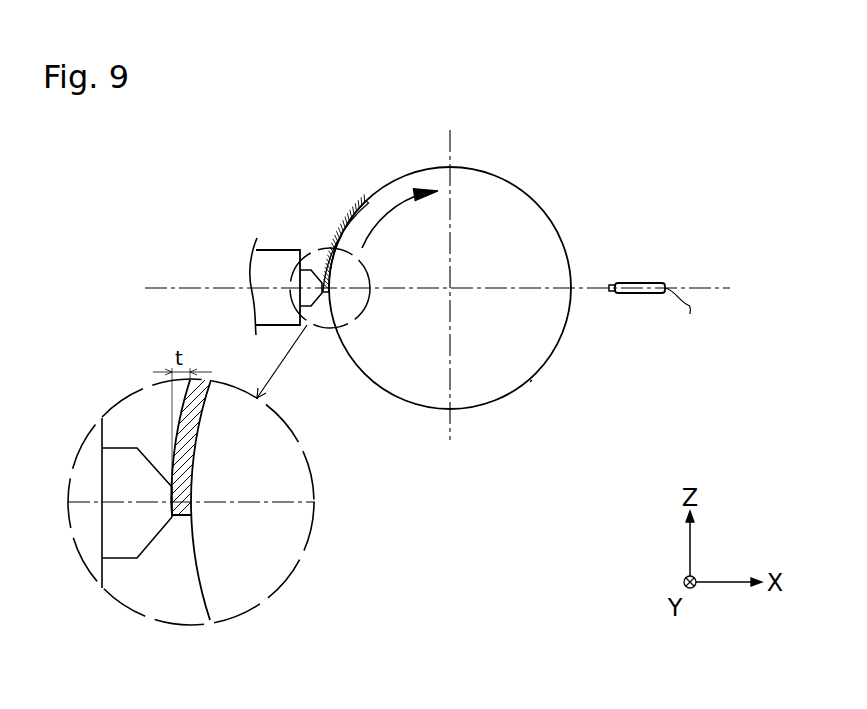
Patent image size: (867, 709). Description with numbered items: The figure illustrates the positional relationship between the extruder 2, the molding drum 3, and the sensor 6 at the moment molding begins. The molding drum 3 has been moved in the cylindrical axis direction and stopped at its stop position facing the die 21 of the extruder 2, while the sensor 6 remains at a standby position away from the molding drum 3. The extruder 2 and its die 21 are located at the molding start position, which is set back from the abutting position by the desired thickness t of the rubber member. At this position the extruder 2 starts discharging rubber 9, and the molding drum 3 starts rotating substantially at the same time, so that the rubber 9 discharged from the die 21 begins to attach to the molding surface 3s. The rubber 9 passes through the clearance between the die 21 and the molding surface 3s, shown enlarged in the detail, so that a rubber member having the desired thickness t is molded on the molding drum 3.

The extruder 2 is at (269, 243).
The die 21 is at (318, 308).
The molding drum 3 is at (505, 173).
The molding surface 3s is at (532, 380).
The rubber 9 is at (353, 207).
The sensor 6 is at (641, 280).